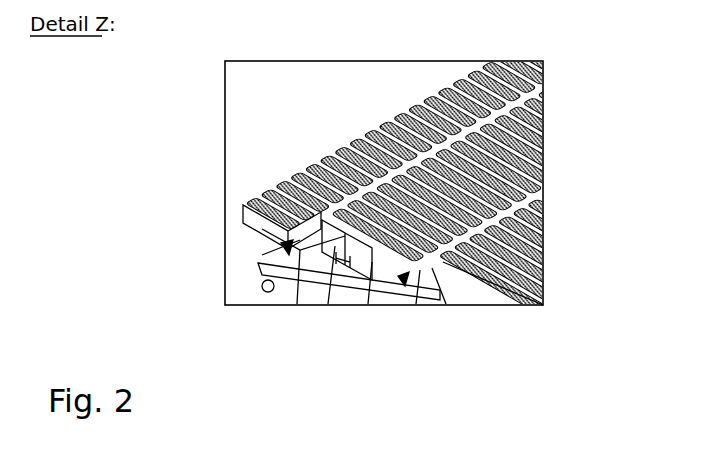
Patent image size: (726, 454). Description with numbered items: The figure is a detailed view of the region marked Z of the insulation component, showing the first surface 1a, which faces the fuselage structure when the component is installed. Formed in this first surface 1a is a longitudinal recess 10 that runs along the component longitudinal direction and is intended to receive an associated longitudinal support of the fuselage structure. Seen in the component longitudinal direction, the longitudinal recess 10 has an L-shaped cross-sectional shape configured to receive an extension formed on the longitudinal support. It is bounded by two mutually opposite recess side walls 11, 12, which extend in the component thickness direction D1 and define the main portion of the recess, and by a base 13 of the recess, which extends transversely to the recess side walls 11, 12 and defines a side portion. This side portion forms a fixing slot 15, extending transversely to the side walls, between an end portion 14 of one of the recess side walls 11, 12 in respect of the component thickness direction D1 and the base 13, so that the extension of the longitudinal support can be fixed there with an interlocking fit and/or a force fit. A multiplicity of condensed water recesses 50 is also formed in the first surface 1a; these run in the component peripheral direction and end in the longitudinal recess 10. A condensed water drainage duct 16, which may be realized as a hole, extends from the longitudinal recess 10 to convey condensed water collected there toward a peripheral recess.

The longitudinal recess 10 is at (512, 60).
The first surface 1a is at (545, 123).
The condensed water recesses 50 is at (402, 102).
The end portion 14 is at (545, 251).
The recess side wall 11 is at (283, 246).
The recess side wall 12 is at (333, 262).
The base of the recess 13 is at (300, 262).
The fixing slot 15 is at (262, 255).
The condensed water drainage duct 16 is at (262, 292).
The component thickness direction D1 is at (342, 262).